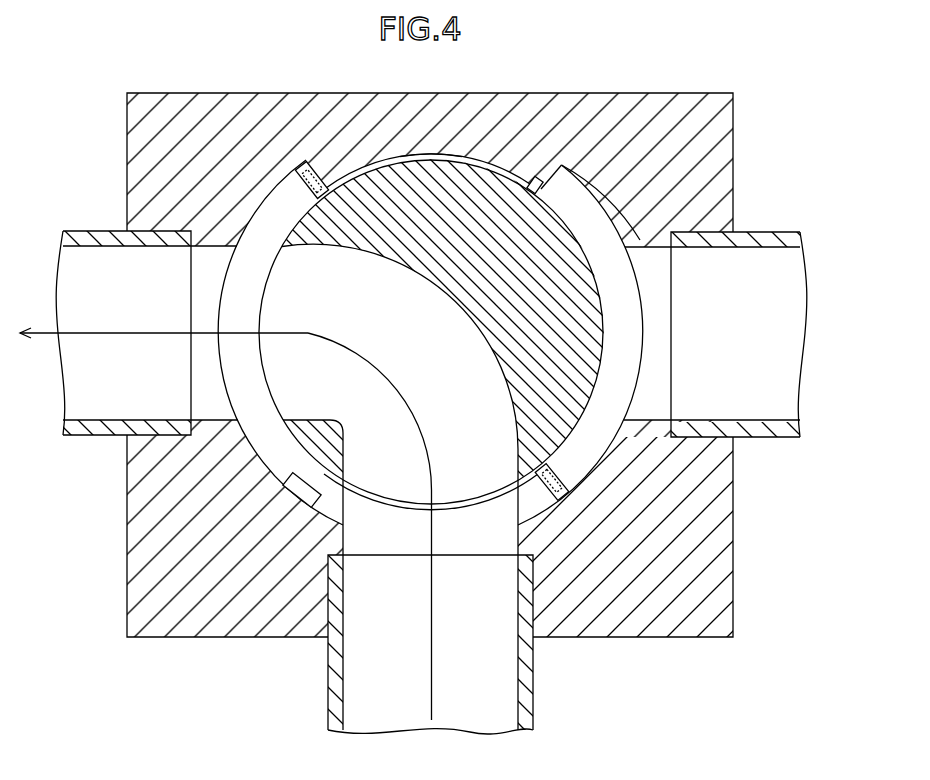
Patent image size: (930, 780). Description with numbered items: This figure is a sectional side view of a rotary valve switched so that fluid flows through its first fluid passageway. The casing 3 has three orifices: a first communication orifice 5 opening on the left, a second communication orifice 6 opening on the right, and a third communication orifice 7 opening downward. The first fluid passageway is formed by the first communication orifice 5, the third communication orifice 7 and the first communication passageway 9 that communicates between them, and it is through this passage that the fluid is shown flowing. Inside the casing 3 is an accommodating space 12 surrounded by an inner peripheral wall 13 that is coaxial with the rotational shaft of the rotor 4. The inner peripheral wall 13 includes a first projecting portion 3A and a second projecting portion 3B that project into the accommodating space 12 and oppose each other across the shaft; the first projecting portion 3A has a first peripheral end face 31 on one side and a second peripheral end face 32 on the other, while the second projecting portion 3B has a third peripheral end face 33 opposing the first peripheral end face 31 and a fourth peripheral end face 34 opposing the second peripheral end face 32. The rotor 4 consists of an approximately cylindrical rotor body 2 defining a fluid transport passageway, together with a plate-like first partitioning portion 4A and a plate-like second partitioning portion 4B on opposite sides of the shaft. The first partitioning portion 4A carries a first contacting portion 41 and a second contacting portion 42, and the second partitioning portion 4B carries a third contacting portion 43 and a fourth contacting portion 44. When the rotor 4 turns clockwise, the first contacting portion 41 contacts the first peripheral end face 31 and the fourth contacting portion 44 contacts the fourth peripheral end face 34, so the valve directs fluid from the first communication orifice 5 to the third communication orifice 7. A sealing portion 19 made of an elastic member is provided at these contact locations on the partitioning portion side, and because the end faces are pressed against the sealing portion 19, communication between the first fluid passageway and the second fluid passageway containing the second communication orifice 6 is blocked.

The rotor body 2 is at (604, 345).
The casing 3 is at (727, 127).
The first projecting portion 3A is at (437, 150).
The second projecting portion 3B is at (337, 500).
The rotor 4 is at (603, 300).
The first partitioning portion 4A is at (302, 168).
The second partitioning portion 4B is at (568, 496).
The first communication orifice 5 is at (158, 278).
The second communication orifice 6 is at (708, 278).
The third communication orifice 7 is at (360, 672).
The first communication passageway 9 is at (455, 362).
The accommodating space 12 is at (588, 214).
The inner peripheral wall 13 is at (604, 228).
The sealing portion 19 is at (295, 180).
The first peripheral end face 31 is at (314, 163).
The second peripheral end face 32 is at (536, 180).
The third peripheral end face 33 is at (318, 480).
The fourth peripheral end face 34 is at (563, 500).
The first contacting portion 41 is at (322, 167).
The second contacting portion 42 is at (296, 190).
The third contacting portion 43 is at (563, 470).
The fourth contacting portion 44 is at (546, 499).